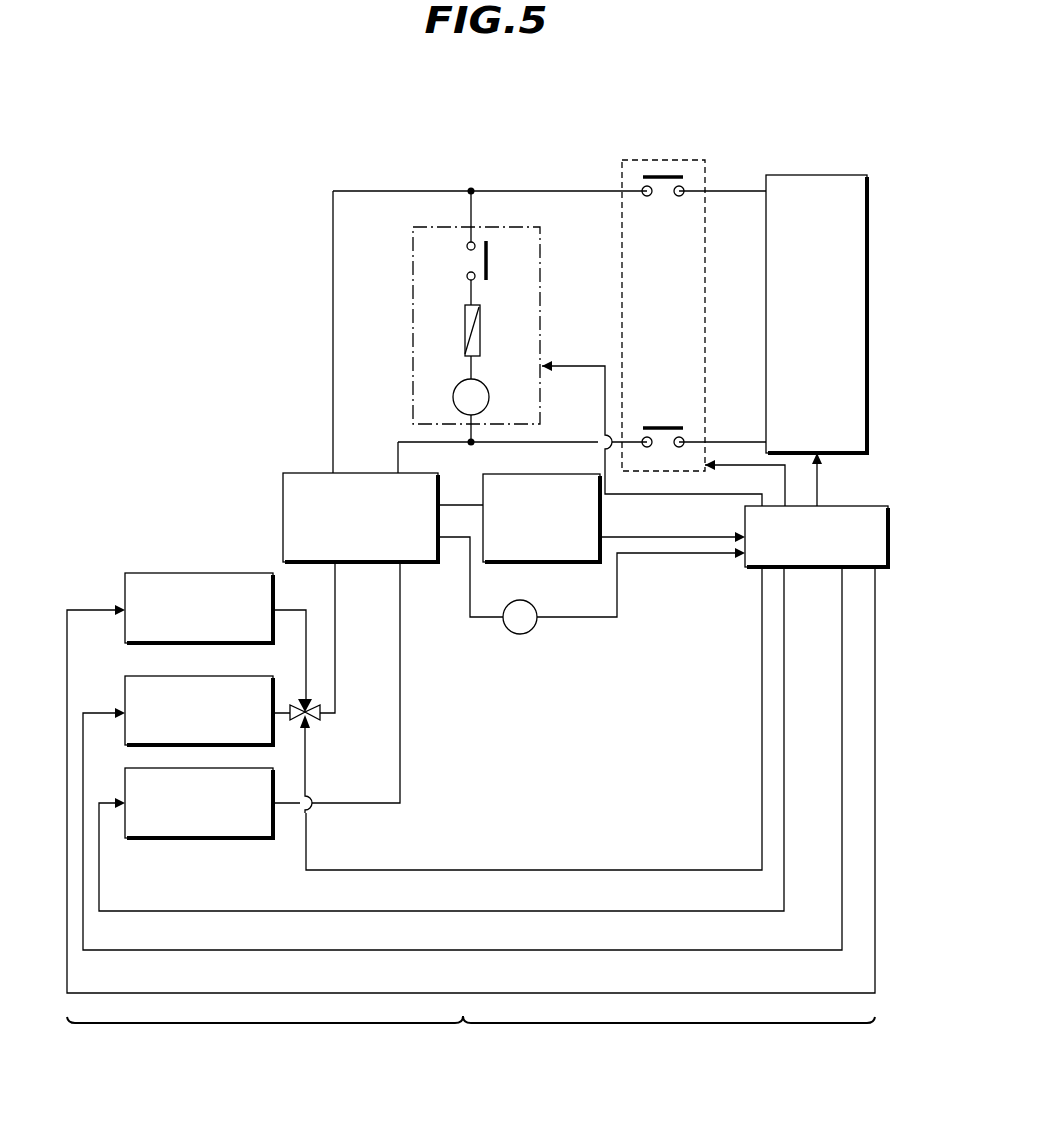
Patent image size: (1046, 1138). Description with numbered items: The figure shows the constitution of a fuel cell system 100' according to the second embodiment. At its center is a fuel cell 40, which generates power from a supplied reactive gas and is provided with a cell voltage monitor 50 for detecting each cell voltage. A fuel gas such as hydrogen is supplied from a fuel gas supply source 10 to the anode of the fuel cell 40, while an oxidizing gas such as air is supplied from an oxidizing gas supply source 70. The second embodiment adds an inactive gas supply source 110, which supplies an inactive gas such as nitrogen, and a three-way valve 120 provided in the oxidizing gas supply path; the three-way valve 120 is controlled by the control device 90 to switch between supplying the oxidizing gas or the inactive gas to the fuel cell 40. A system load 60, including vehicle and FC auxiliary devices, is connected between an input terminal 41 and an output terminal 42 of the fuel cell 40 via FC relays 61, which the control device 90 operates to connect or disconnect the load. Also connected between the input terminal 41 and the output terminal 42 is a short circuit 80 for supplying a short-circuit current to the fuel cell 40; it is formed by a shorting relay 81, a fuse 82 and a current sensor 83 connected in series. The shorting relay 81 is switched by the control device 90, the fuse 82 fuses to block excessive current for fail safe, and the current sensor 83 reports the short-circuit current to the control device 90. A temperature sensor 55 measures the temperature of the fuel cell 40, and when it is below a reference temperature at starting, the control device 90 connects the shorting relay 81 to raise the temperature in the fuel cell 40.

The fuel gas supply source 10 is at (225, 838).
The fuel cell 40 is at (283, 513).
The input terminal 41 is at (471, 190).
The output terminal 42 is at (471, 445).
The cell voltage monitor 50 is at (530, 563).
The temperature sensor 55 is at (518, 634).
The system load 60 is at (815, 175).
The FC relays 61 is at (668, 175).
The oxidizing gas supply source 70 is at (145, 676).
The short circuit 80 is at (482, 294).
The shorting relay 81 is at (489, 264).
The fuse 82 is at (482, 332).
The current sensor 83 is at (490, 394).
The control device 90 is at (850, 506).
The fuel cell system 100' is at (471, 1036).
The inactive gas supply source 110 is at (210, 573).
The three-way valve 120 is at (320, 717).